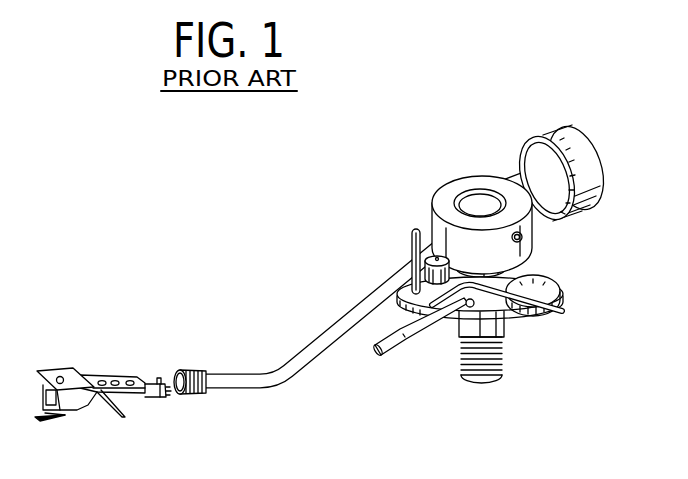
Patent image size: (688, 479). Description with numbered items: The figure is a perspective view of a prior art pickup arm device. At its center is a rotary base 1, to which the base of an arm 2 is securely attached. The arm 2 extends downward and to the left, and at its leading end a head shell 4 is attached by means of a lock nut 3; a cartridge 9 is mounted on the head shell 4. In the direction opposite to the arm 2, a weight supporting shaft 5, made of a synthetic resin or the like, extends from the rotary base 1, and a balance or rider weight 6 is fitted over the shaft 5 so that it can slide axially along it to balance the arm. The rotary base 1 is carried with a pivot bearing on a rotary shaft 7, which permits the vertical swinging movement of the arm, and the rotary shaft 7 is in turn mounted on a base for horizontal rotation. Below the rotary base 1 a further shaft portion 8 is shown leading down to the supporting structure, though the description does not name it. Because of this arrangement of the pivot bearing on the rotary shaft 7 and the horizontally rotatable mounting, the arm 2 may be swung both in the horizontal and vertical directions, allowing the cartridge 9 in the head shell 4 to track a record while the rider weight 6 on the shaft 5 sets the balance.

The rotary base 1 is at (435, 192).
The arm 2 is at (343, 305).
The lock nut 3 is at (192, 370).
The head shell 4 is at (112, 375).
The weight supporting shaft 5 is at (517, 178).
The balance weight 6 is at (582, 146).
The rotary shaft 7 is at (478, 190).
The pivot shaft 8 is at (496, 264).
The cartridge 9 is at (62, 415).